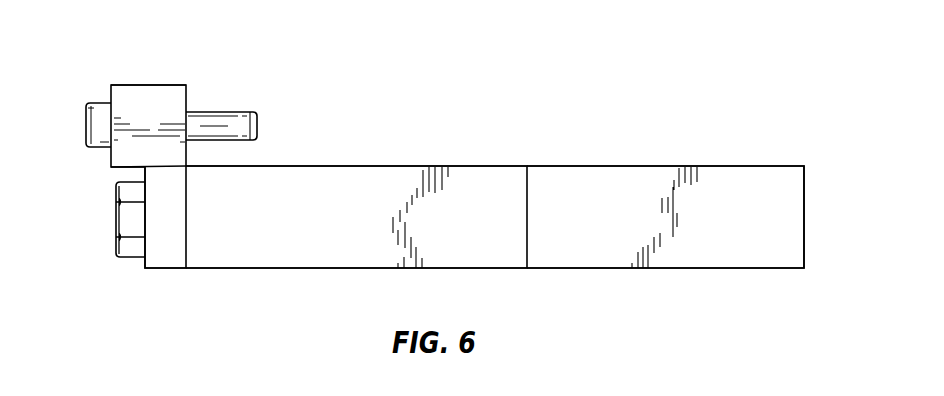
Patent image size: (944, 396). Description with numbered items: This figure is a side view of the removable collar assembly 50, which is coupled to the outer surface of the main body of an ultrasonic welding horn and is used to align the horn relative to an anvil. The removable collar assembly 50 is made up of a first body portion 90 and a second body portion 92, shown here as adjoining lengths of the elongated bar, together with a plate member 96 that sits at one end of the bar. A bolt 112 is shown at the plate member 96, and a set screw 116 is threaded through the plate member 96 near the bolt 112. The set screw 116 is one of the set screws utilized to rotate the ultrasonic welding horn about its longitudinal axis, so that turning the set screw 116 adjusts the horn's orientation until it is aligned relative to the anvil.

The removable collar assembly 50 is at (508, 72).
The first body portion 90 is at (617, 175).
The second body portion 92 is at (343, 175).
The plate member 96 is at (169, 256).
The bolt 112 is at (130, 249).
The set screw 116 is at (95, 124).